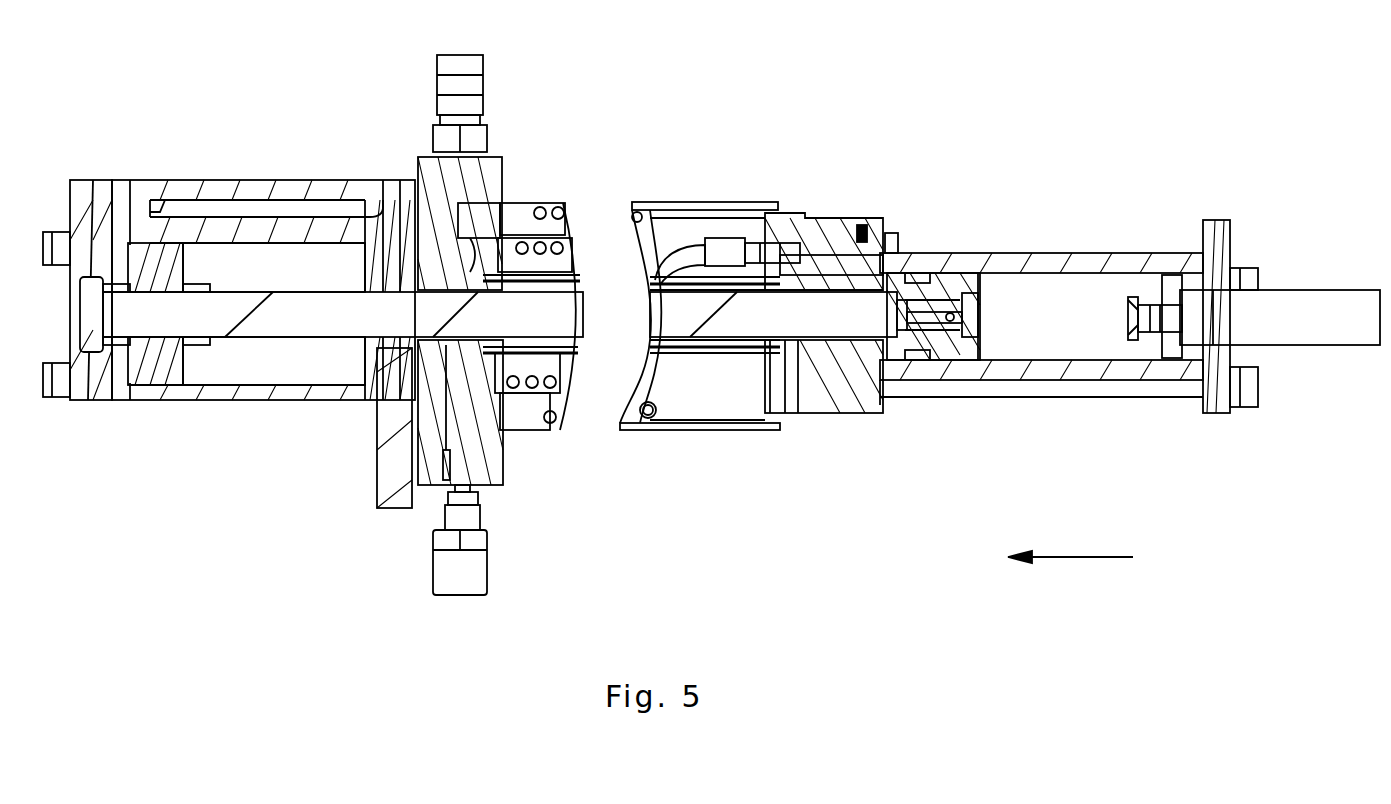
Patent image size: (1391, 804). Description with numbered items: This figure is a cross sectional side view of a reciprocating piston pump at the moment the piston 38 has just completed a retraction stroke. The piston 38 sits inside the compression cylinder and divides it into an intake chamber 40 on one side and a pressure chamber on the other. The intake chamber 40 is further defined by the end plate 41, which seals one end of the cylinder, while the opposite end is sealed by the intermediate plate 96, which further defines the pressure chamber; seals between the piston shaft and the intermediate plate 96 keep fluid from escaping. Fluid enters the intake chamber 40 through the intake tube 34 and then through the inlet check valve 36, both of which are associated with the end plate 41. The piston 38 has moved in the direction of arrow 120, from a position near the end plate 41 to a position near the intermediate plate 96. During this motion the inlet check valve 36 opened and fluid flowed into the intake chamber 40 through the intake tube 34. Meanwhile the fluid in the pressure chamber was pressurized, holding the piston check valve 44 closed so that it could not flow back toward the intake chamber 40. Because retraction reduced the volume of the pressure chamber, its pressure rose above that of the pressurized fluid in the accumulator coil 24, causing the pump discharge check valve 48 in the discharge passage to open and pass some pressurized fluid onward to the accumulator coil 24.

The accumulator coil 24 is at (647, 387).
The intake tube 34 is at (1318, 345).
The inlet check valve 36 is at (1133, 340).
The piston 38 is at (983, 285).
The intake chamber 40 is at (1065, 312).
The end plate 41 is at (1213, 250).
The piston check valve 44 is at (975, 283).
The pump discharge check valve 48 is at (833, 227).
The intermediate plate 96 is at (843, 380).
The arrow 120 is at (1078, 573).